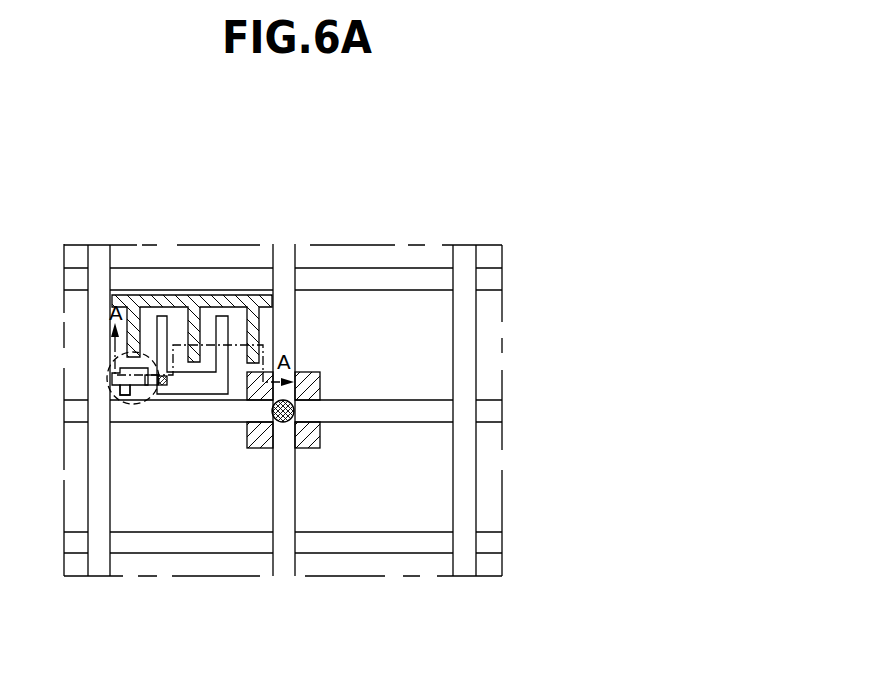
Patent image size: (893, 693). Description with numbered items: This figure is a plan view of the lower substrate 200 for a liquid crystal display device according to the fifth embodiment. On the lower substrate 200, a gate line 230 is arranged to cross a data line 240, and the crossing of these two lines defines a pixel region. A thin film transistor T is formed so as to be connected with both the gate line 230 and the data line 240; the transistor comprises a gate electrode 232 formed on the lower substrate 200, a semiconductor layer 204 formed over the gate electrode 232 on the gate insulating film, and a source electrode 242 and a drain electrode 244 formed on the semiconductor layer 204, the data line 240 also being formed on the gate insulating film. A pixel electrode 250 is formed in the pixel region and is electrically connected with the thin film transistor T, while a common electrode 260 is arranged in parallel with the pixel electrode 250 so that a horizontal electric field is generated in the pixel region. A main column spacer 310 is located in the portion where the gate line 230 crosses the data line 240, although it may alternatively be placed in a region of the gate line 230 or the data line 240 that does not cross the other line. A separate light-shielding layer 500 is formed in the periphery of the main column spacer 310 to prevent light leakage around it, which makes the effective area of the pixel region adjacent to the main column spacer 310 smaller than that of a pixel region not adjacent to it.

The lower substrate 200 is at (528, 217).
The gate line 230 is at (498, 283).
The gate electrode 232 is at (112, 406).
The data line 240 is at (283, 272).
The source electrode 242 is at (122, 393).
The drain electrode 244 is at (120, 366).
The pixel electrode 250 is at (224, 321).
The common electrode 260 is at (163, 300).
The semiconductor layer 204 is at (142, 374).
The thin film transistor T is at (107, 379).
The main column spacer 310 is at (283, 422).
The light-shielding layer 500 is at (312, 372).